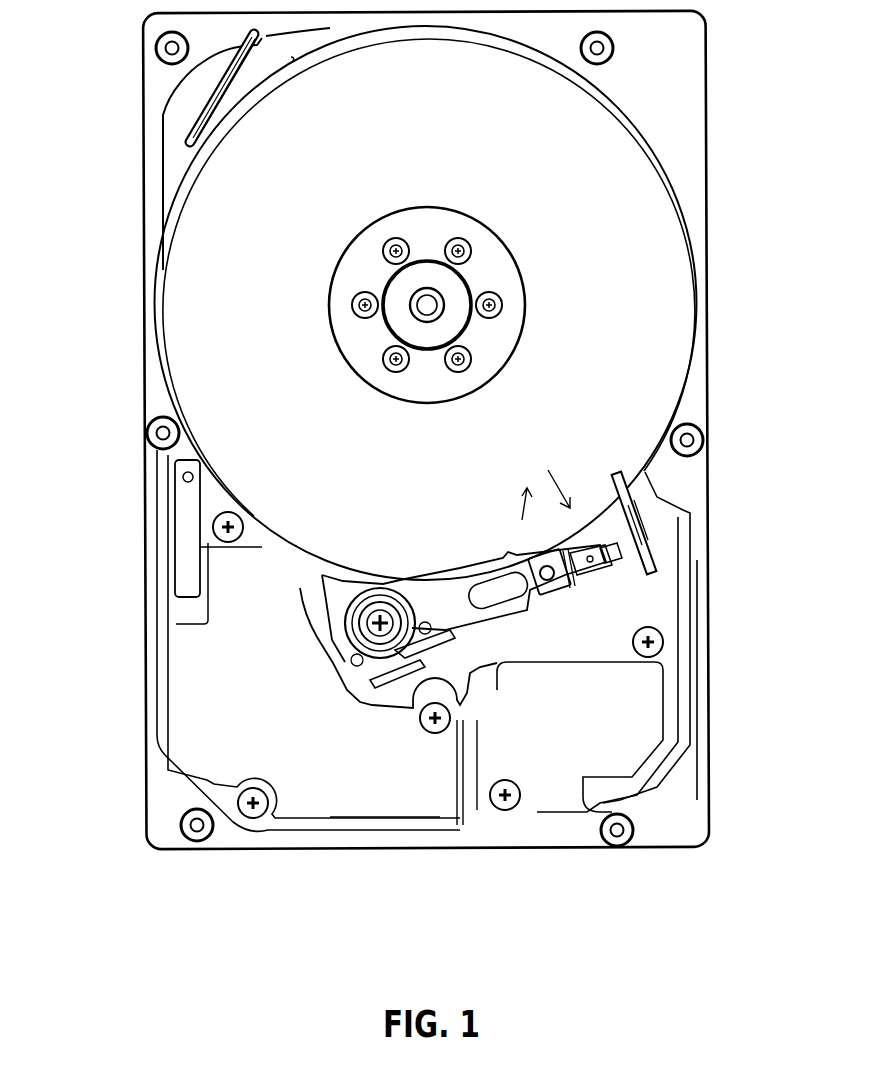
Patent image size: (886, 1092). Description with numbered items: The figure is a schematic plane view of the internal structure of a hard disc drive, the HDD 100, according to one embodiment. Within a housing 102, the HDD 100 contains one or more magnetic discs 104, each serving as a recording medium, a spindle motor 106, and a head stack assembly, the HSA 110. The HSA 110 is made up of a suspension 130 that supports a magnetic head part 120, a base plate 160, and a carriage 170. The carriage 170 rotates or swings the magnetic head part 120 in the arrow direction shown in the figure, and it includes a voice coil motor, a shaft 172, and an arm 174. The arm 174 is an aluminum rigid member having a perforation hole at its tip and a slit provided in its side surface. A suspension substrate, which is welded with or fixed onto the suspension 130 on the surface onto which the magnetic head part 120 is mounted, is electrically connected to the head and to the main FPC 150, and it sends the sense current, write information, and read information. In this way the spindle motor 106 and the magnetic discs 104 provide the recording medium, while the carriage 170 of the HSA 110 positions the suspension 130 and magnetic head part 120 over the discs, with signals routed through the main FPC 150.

The hard disc drive 100 is at (117, 220).
The housing 102 is at (708, 298).
The magnetic disc 104 is at (640, 252).
The spindle motor 106 is at (440, 327).
The head stack assembly 110 is at (425, 704).
The magnetic head part 120 is at (610, 553).
The suspension 130 is at (602, 565).
The main FPC 150 is at (390, 693).
The base plate 160 is at (558, 587).
The carriage 170 is at (303, 590).
The shaft 172 is at (352, 645).
The arm 174 is at (497, 612).